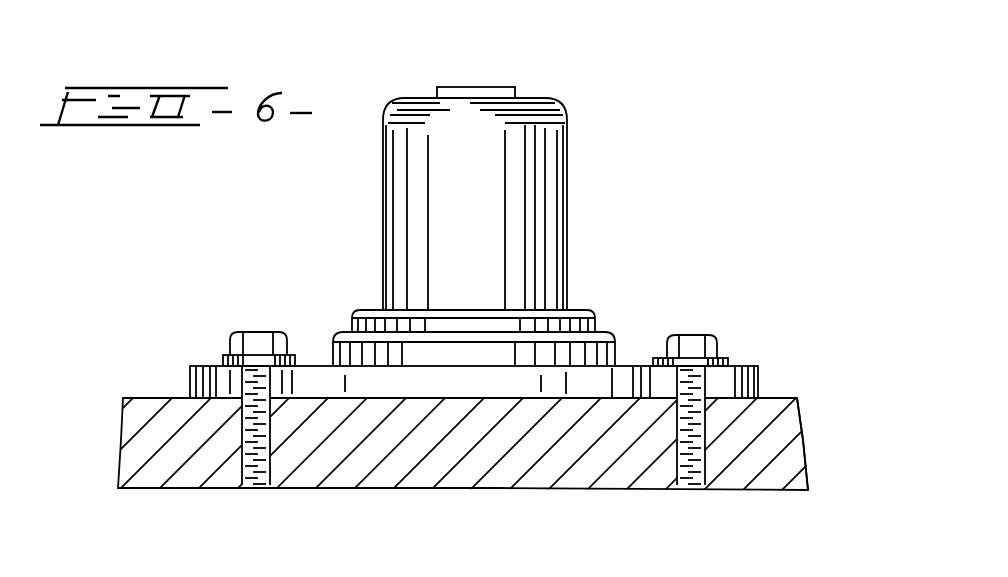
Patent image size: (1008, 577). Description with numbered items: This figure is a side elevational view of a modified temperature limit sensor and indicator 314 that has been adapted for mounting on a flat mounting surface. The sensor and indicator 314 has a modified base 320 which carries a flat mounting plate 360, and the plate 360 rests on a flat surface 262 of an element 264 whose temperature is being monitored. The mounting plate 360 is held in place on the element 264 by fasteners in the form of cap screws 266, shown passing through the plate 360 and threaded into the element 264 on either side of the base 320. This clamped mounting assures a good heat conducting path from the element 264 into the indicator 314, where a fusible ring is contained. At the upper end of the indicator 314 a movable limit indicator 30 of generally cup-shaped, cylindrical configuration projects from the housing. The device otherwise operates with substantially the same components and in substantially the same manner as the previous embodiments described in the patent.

The movable limit indicator 30 is at (496, 85).
The temperature limit sensor and indicator 314 is at (584, 226).
The base 320 is at (602, 327).
The flat mounting plate 360 is at (362, 378).
The element 264 is at (590, 446).
The cap screws 266 is at (250, 332).
The flat surface 262 is at (770, 397).